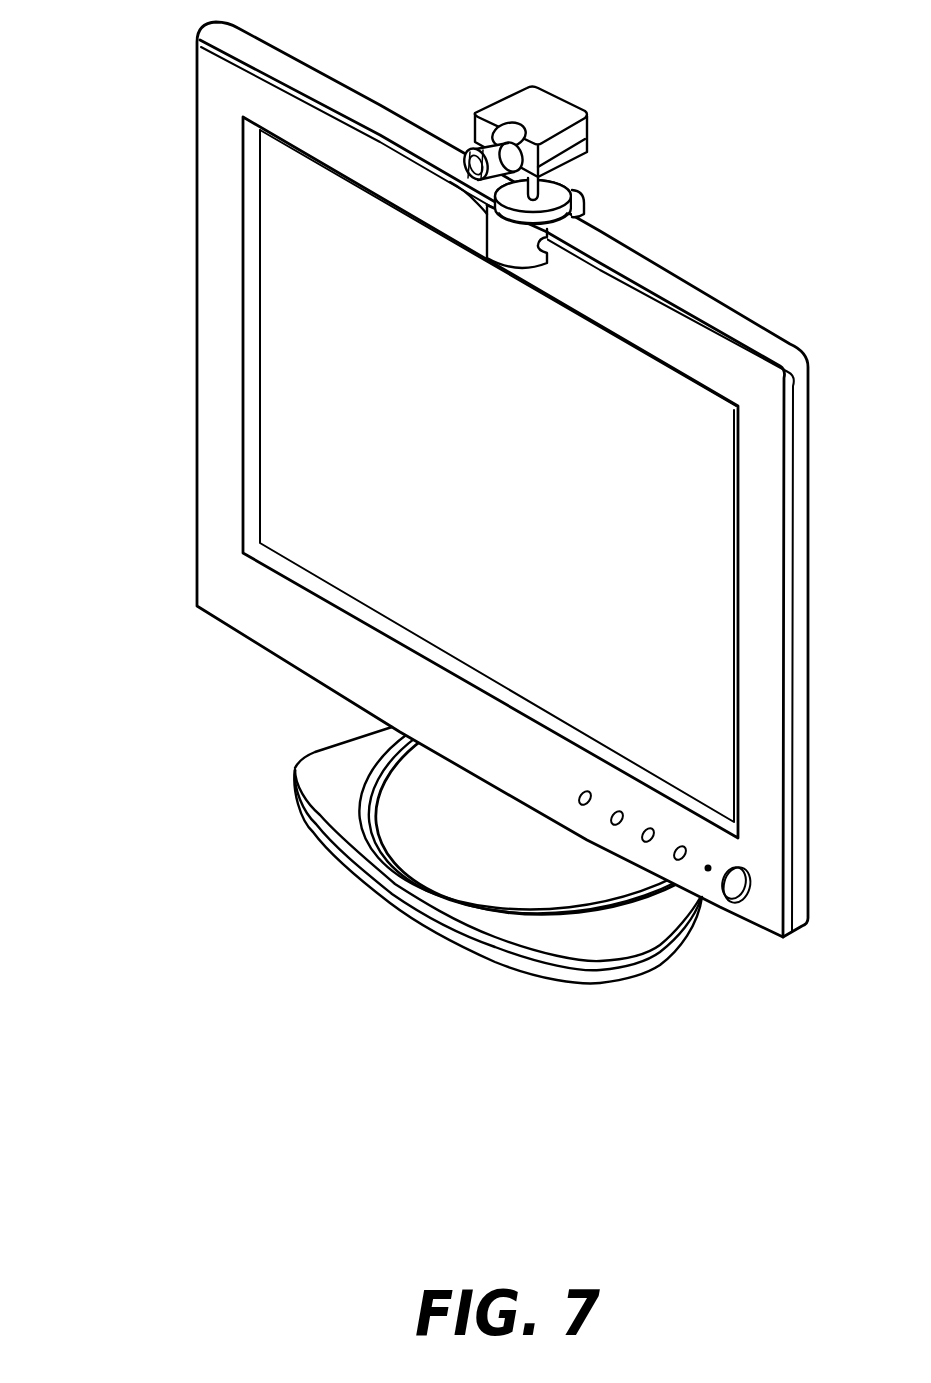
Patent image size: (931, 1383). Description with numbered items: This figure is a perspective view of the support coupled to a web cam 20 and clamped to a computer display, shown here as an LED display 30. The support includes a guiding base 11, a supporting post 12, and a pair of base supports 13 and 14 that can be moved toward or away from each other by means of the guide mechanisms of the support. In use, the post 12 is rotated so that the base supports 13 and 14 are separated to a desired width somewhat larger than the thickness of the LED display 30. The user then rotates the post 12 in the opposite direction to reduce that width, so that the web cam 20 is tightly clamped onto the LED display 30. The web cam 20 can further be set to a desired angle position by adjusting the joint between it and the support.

The guiding base 11 is at (566, 155).
The supporting post 12 is at (550, 180).
The base support 13 is at (584, 213).
The base support 14 is at (487, 217).
The web cam 20 is at (553, 110).
The LED display 30 is at (217, 280).